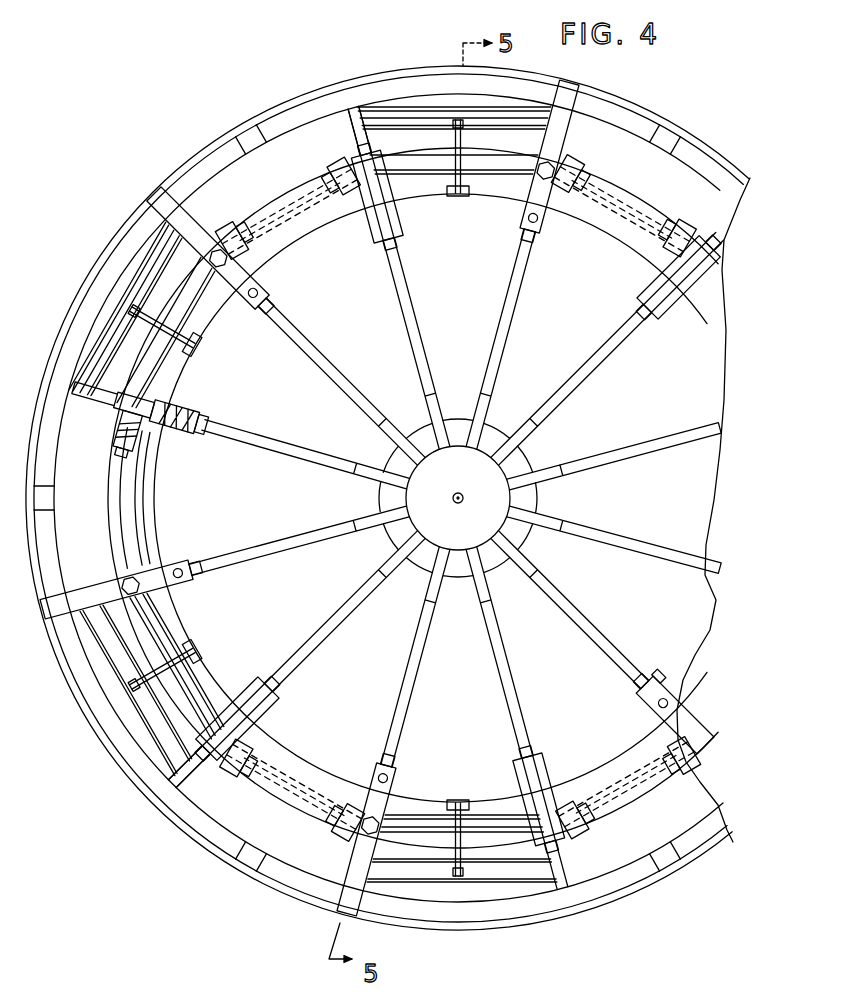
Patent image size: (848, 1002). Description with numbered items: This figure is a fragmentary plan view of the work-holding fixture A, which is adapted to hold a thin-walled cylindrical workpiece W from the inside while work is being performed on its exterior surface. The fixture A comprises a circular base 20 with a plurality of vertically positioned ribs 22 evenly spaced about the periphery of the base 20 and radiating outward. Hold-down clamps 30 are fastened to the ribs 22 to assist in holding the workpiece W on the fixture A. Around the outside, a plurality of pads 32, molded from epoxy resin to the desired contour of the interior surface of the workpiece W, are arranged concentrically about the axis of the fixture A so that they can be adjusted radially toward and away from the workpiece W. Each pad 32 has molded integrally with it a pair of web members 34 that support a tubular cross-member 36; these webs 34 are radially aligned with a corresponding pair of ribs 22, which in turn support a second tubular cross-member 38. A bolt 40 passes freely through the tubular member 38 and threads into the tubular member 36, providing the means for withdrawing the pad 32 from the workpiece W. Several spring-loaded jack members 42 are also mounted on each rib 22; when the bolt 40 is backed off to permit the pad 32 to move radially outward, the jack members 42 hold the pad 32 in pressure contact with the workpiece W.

The circular base 20 is at (600, 762).
The rib 22 is at (216, 440).
The hold-down clamp 30 is at (185, 215).
The pad 32 is at (45, 446).
The web member 34 is at (355, 128).
The cross-member 36 is at (410, 108).
The cross-member 38 is at (430, 187).
The bolt 40 is at (197, 341).
The spring-loaded jack member 42 is at (546, 243).
The work-holding fixture A is at (707, 660).
The workpiece W is at (62, 692).